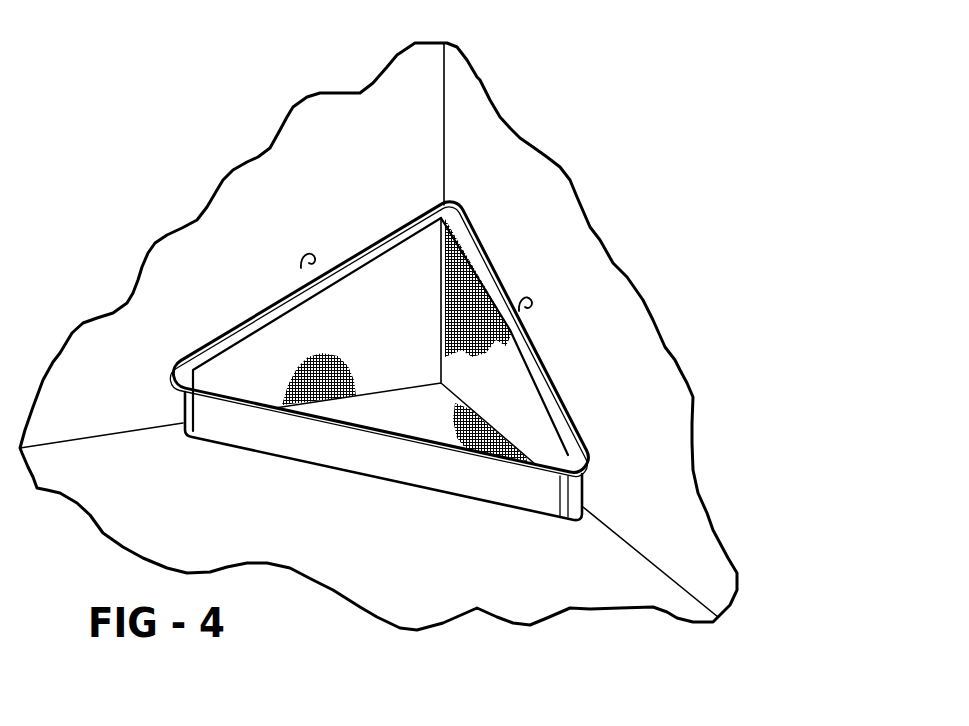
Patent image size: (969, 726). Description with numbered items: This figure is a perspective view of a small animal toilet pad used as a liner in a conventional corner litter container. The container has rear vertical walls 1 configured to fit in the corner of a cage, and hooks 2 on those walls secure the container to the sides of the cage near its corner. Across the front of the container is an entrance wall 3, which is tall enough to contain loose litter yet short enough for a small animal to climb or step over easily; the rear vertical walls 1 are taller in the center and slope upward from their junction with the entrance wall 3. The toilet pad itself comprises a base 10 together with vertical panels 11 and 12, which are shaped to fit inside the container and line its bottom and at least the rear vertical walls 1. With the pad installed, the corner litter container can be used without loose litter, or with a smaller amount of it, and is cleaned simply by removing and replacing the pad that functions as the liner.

The rear vertical walls 1 is at (305, 289).
The hooks 2 is at (312, 258).
The entrance wall 3 is at (524, 498).
The base 10 is at (384, 420).
The vertical panel 11 is at (256, 339).
The vertical panel 12 is at (534, 431).